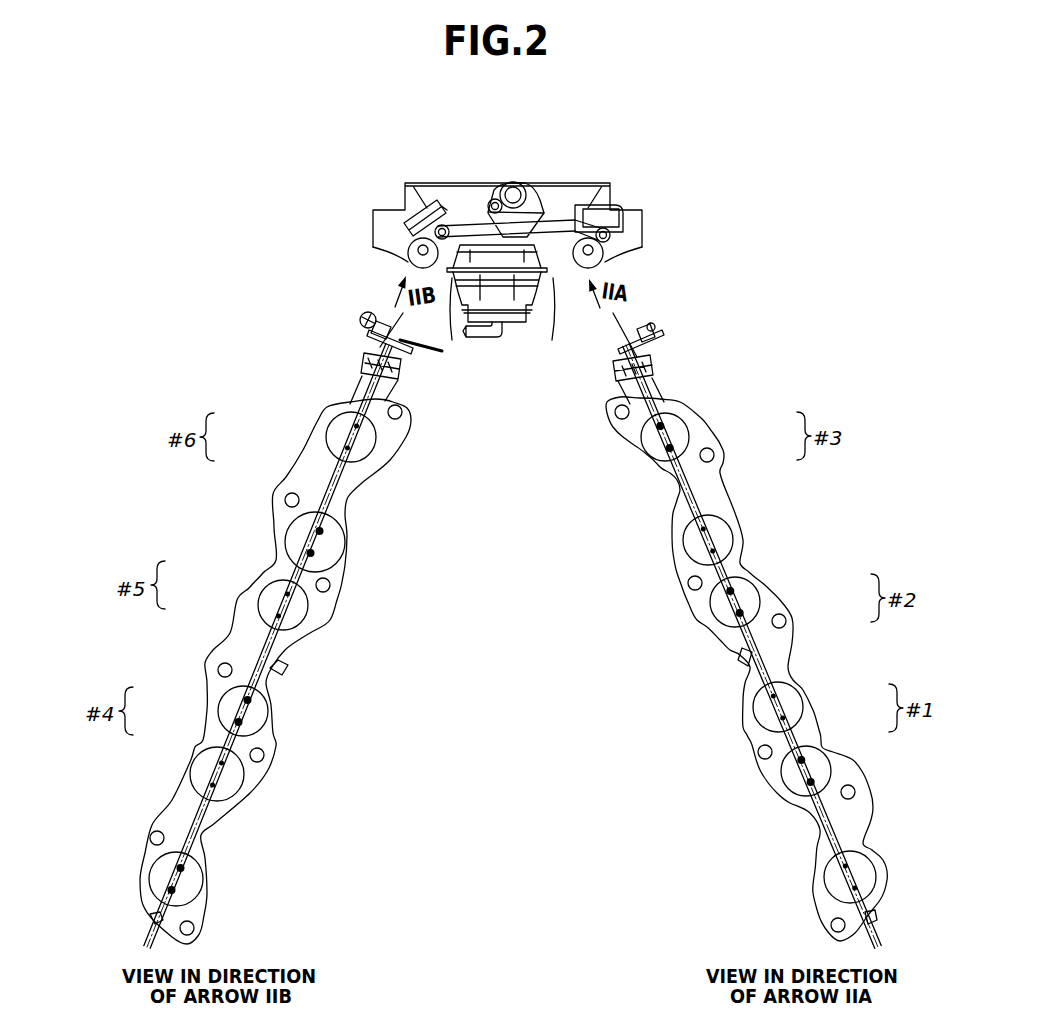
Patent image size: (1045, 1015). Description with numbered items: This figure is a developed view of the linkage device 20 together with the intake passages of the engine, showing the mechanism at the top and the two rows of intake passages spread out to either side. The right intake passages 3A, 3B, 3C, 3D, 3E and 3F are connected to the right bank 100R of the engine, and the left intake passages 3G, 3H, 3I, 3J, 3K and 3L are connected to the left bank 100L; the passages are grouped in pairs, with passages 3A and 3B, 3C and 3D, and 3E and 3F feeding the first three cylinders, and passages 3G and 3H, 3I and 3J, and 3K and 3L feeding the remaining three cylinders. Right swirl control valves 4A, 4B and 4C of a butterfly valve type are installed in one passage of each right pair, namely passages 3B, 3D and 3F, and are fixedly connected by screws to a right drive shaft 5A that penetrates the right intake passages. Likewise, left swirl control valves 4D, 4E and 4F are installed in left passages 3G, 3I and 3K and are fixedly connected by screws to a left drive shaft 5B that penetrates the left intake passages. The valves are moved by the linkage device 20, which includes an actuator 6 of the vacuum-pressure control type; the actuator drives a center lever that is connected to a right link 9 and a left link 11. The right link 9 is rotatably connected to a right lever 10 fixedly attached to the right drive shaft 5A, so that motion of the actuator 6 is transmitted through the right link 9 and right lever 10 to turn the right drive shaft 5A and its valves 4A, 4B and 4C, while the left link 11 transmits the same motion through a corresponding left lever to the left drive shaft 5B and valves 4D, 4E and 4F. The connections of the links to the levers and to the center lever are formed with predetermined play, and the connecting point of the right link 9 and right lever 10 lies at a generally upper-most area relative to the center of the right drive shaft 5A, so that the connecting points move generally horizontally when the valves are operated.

The linkage device 20 is at (489, 190).
The actuator 6 is at (512, 330).
The right link 9 is at (572, 262).
The left link 11 is at (443, 354).
The right lever 10 is at (660, 332).
The right drive shaft 5A is at (660, 380).
The left drive shaft 5B is at (363, 382).
The right intake passage 3A is at (860, 853).
The right intake passage 3B is at (817, 757).
The right intake passage 3C is at (790, 686).
The right intake passage 3D is at (753, 600).
The right intake passage 3E is at (723, 527).
The right intake passage 3F is at (683, 437).
The left intake passage 3G is at (158, 866).
The left intake passage 3H is at (205, 755).
The left intake passage 3I is at (232, 688).
The left intake passage 3J is at (265, 600).
The left intake passage 3K is at (292, 528).
The left intake passage 3L is at (330, 430).
The right swirl control valve 4A is at (790, 780).
The right swirl control valve 4B is at (720, 613).
The right swirl control valve 4C is at (652, 447).
The left swirl control valve 4D is at (193, 883).
The left swirl control valve 4E is at (260, 713).
The left swirl control valve 4F is at (327, 550).
The left bank 100L is at (213, 657).
The right bank 100R is at (806, 664).